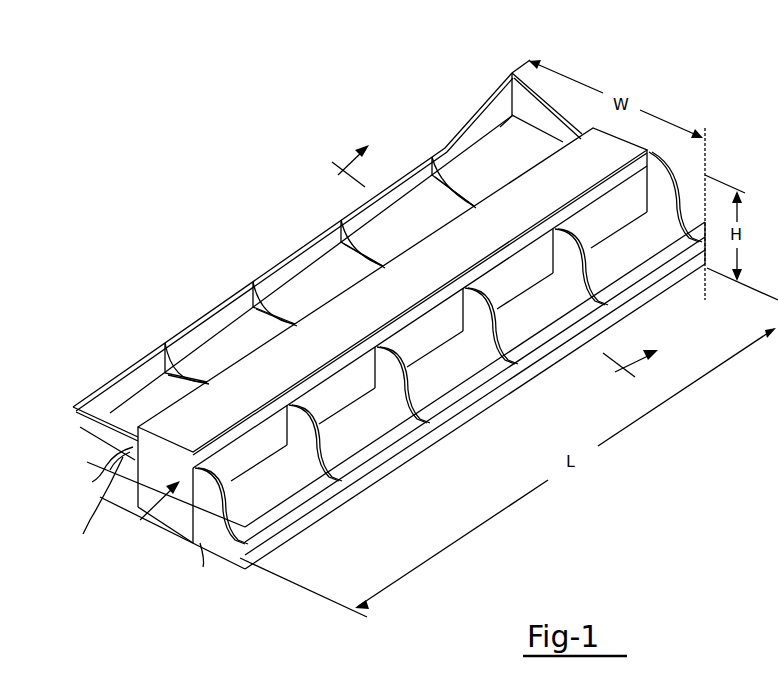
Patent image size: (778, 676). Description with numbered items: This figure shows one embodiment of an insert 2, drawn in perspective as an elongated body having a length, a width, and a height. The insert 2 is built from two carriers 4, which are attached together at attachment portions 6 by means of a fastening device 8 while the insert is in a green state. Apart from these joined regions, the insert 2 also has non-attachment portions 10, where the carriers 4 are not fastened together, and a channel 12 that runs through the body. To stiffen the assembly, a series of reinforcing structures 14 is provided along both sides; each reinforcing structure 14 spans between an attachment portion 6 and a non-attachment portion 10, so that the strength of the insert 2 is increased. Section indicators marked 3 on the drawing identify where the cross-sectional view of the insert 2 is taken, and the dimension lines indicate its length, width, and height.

The insert 2 is at (152, 270).
The section line 3 is at (482, 270).
The carrier 4 is at (62, 414).
The attachment portion 6 is at (107, 472).
The fastening device 8 is at (203, 567).
The non-attachment portion 10 is at (150, 458).
The channel 12 is at (140, 520).
The reinforcing structure 14 is at (186, 347).